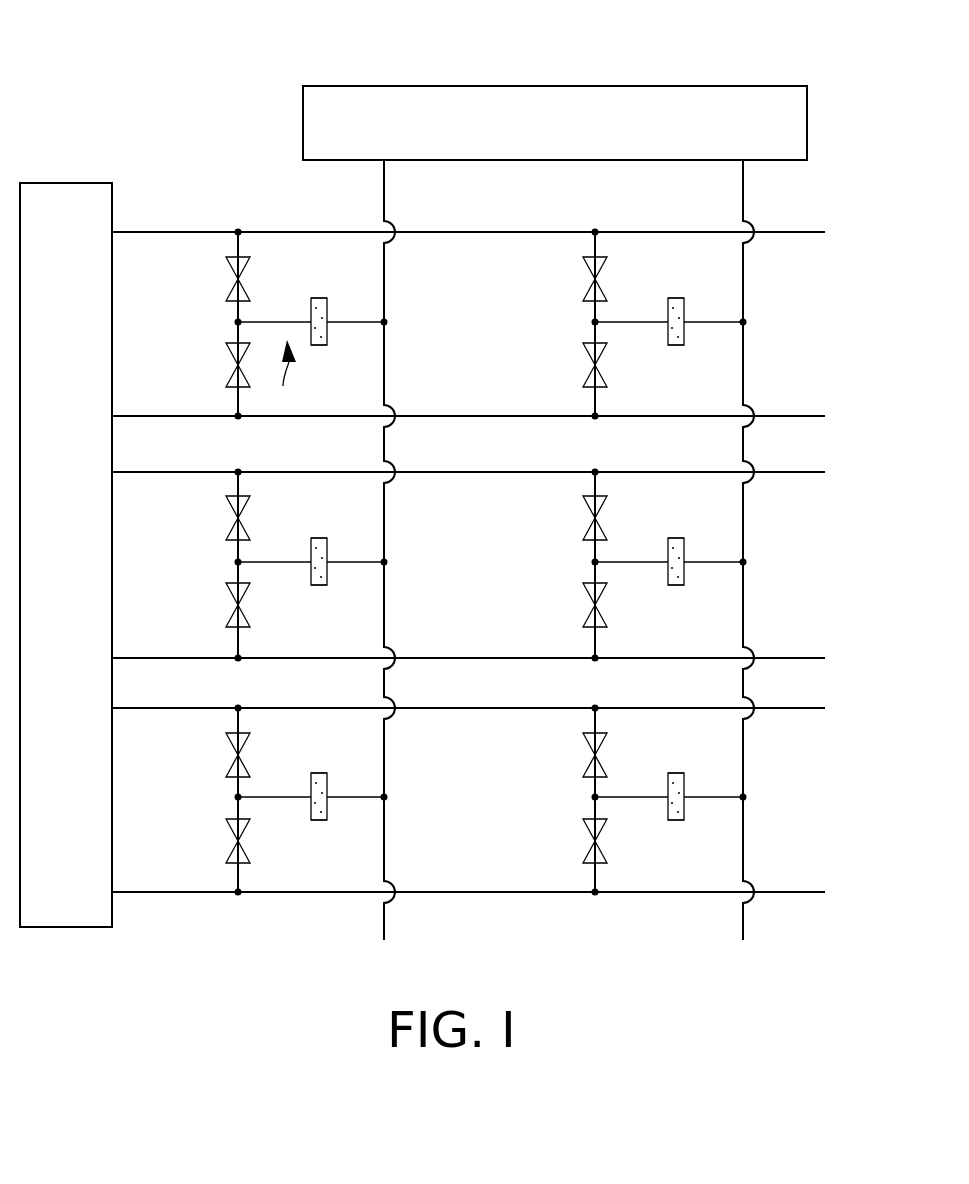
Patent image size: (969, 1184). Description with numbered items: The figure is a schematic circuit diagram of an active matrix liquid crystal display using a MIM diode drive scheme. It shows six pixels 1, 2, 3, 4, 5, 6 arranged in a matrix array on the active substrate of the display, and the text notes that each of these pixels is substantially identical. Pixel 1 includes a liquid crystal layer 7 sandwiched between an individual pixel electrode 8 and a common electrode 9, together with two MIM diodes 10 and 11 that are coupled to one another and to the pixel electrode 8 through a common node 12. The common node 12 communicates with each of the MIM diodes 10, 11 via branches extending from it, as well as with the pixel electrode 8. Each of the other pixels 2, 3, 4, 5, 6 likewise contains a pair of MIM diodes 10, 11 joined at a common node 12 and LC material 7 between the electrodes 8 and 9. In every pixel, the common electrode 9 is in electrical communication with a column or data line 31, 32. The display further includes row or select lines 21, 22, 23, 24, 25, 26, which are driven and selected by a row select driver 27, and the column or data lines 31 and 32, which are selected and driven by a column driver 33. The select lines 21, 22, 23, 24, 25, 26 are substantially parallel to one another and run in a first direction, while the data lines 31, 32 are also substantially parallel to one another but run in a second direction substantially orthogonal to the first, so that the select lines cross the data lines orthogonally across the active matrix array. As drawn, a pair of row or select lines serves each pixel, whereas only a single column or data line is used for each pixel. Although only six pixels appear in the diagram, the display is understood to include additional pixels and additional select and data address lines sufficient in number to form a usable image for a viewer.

The pixel 1 is at (308, 261).
The pixel 2 is at (285, 501).
The pixel 3 is at (278, 898).
The pixel 4 is at (550, 300).
The pixel 5 is at (557, 536).
The pixel 6 is at (558, 774).
The liquid crystal layer 7 is at (317, 345).
The pixel electrode 8 is at (308, 305).
The common electrode 9 is at (327, 308).
The MIM diode 10 is at (234, 286).
The MIM diode 11 is at (233, 360).
The common node 12 is at (237, 322).
The row or select line 21 is at (775, 233).
The row or select line 22 is at (765, 416).
The row or select line 23 is at (775, 472).
The row or select line 24 is at (765, 658).
The row or select line 25 is at (772, 709).
The row or select line 26 is at (777, 895).
The row select driver 27 is at (47, 203).
The column or data line 31 is at (384, 200).
The column or data line 32 is at (742, 203).
The column driver 33 is at (703, 118).